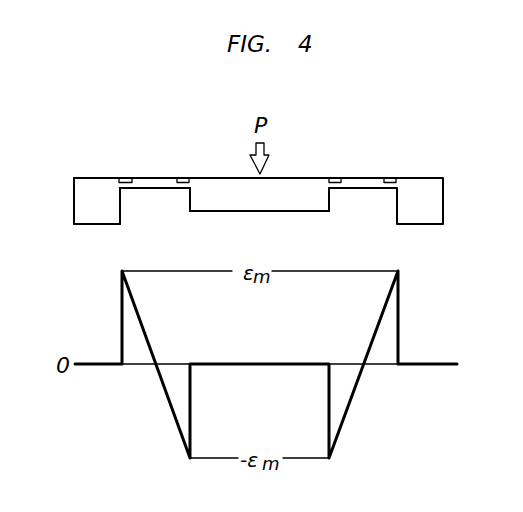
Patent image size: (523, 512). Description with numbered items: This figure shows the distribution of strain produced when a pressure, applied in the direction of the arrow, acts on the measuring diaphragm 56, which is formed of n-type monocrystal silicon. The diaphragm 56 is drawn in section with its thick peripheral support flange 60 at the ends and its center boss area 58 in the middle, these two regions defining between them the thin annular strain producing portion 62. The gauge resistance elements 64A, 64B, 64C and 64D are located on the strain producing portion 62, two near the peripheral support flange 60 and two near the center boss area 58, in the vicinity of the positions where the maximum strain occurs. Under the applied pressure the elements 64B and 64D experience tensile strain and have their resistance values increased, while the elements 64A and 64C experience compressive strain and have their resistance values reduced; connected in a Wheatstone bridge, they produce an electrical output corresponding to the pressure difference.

The measuring diaphragm 56 is at (84, 177).
The center boss area 58 is at (217, 203).
The peripheral support flange 60 is at (102, 210).
The annular strain producing portion 62 is at (153, 182).
The gauge resistance element 64A is at (186, 177).
The gauge resistance element 64B is at (126, 177).
The gauge resistance element 64C is at (336, 177).
The gauge resistance element 64D is at (393, 177).